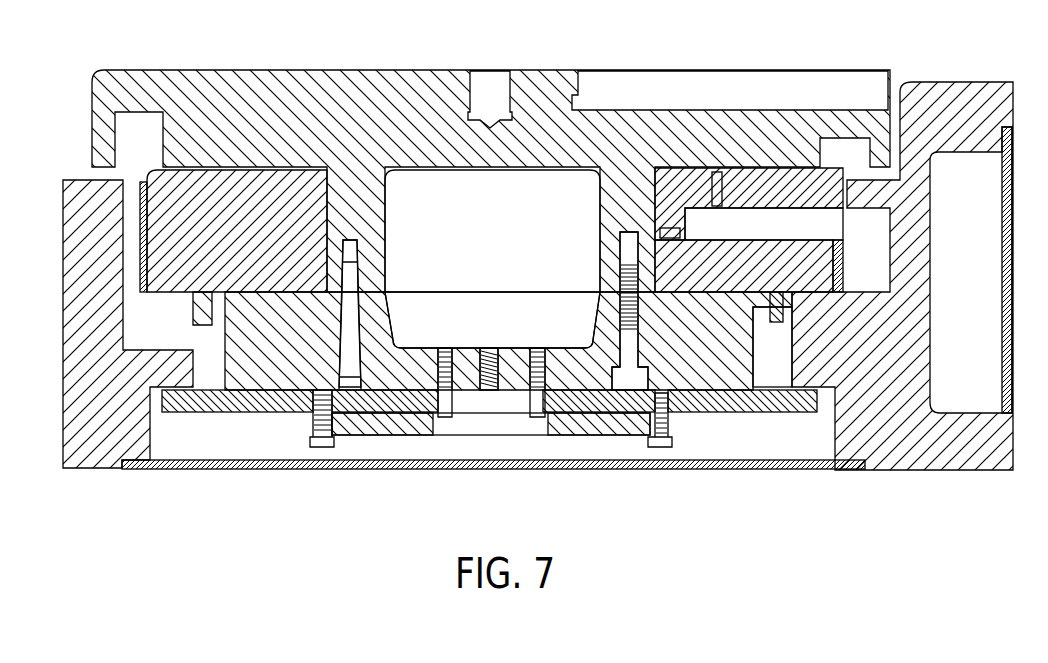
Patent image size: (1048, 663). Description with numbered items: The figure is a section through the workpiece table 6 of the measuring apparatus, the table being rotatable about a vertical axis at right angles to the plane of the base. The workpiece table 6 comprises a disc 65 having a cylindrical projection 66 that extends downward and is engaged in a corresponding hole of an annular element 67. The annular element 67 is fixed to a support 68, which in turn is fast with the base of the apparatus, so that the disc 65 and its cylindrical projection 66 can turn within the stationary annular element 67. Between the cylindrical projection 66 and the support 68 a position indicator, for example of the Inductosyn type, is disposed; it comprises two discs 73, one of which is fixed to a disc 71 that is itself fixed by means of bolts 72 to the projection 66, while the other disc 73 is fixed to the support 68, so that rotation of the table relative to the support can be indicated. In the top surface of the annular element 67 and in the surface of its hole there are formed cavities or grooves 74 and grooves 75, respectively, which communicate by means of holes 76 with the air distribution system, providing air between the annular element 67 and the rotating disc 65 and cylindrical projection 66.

The workpiece table 6 is at (570, 57).
The disc 65 is at (373, 100).
The cylindrical projection 66 is at (358, 205).
The annular element 67 is at (768, 308).
The support 68 is at (906, 340).
The disc 71 is at (734, 362).
The bolts 72 is at (698, 392).
The discs 73 is at (603, 418).
The cavities or grooves 74 is at (737, 170).
The cavities or grooves 75 is at (655, 238).
The holes 76 is at (794, 222).